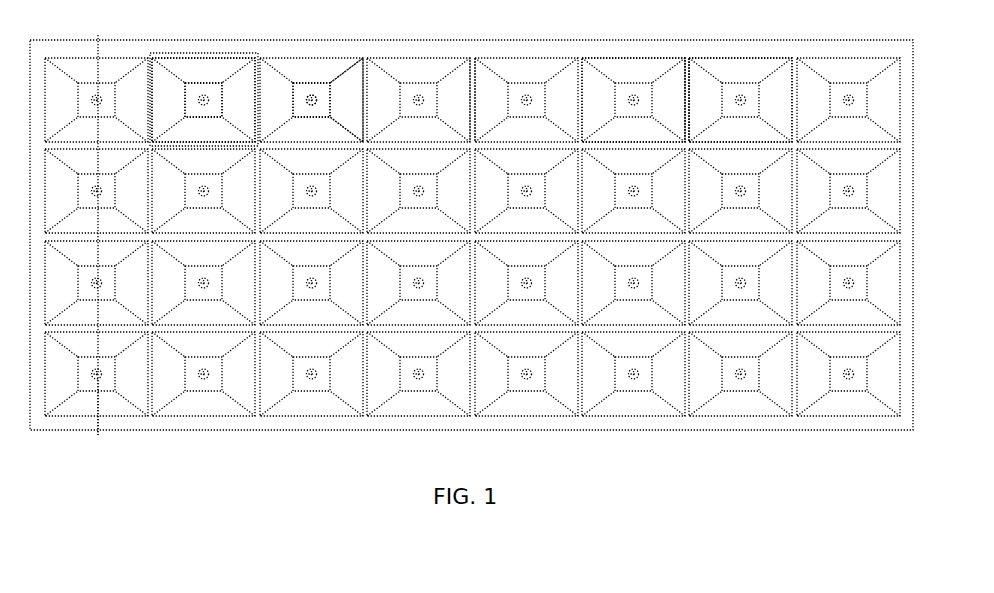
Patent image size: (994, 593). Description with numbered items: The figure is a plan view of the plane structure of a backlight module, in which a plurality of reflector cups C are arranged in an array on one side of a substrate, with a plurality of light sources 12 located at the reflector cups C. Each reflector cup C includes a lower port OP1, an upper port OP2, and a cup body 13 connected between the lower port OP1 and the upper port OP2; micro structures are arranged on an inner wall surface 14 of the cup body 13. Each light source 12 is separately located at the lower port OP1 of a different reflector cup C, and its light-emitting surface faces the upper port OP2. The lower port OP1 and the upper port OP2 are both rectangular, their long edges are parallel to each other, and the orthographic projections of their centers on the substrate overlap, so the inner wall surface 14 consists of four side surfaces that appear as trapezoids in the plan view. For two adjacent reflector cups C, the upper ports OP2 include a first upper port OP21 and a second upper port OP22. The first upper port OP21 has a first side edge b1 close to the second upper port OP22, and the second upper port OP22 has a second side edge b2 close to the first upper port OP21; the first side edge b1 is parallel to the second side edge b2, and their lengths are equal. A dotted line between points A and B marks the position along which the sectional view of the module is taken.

The section position end point A is at (97, 227).
The section position end point B is at (98, 419).
The reflector cup C is at (162, 53).
The lower port OP1 is at (200, 97).
The upper port OP2 is at (237, 83).
The light source 12 is at (310, 96).
The inner wall surface 14 is at (350, 100).
The cup body 13 is at (472, 58).
The first upper port OP21 is at (636, 58).
The first side edge b1 is at (682, 90).
The second side edge b2 is at (698, 88).
The second upper port OP22 is at (768, 58).